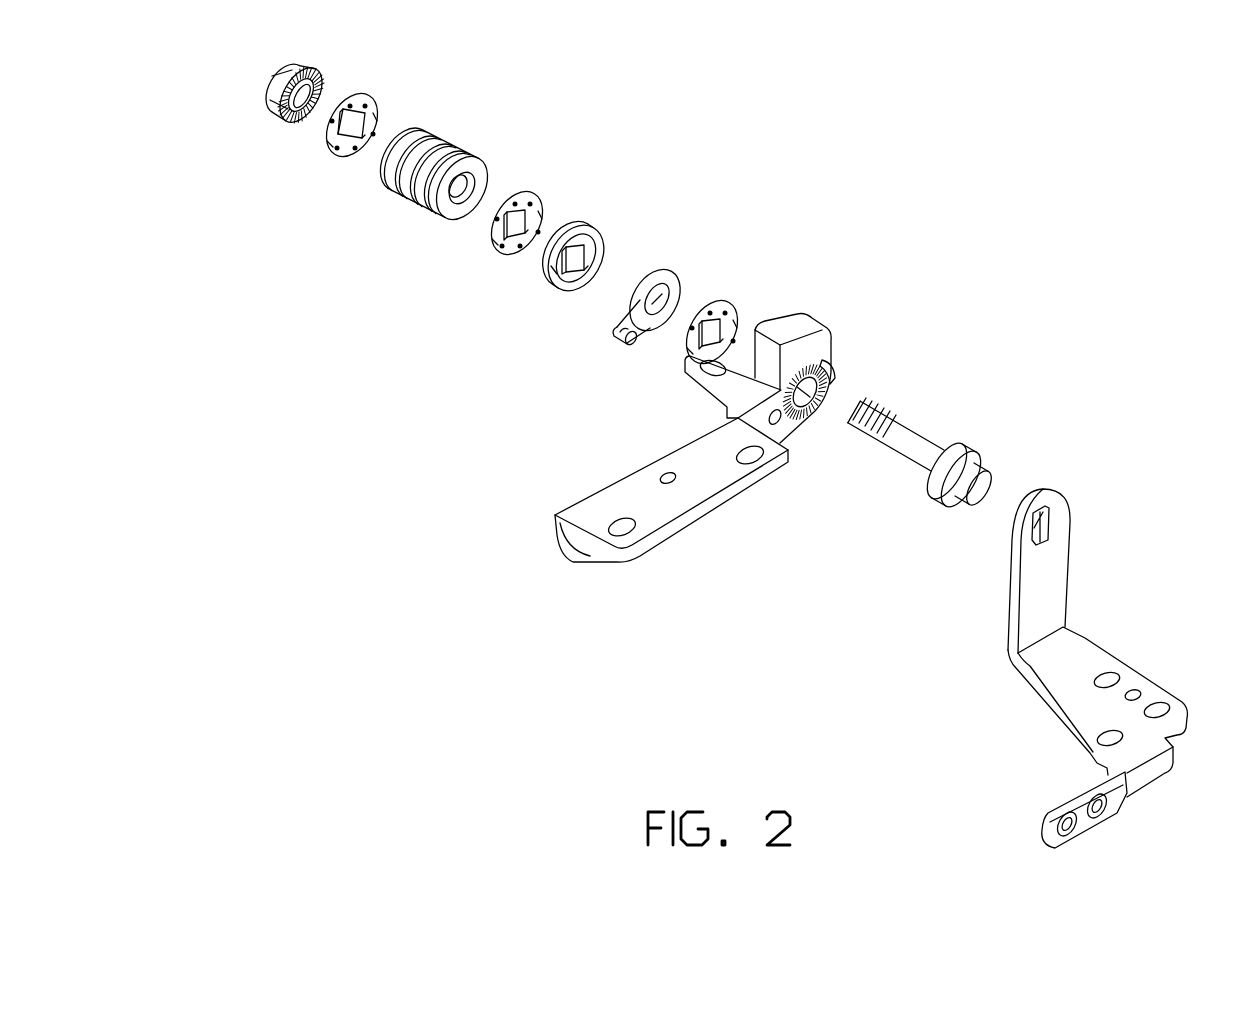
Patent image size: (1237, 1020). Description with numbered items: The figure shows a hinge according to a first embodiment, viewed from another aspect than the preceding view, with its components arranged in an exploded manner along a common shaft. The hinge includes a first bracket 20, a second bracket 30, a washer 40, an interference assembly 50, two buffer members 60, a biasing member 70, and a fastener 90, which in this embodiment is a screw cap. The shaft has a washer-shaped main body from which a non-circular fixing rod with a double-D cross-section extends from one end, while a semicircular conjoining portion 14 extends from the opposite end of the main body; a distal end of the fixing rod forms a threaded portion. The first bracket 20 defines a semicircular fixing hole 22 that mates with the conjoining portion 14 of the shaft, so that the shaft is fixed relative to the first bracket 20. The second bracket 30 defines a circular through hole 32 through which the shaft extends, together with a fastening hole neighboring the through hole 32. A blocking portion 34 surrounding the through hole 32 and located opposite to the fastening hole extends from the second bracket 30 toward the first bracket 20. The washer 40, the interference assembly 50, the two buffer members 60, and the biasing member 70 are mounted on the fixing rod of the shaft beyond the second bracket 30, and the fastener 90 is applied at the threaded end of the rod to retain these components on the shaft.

The conjoining portion 14 is at (968, 477).
The first bracket 20 is at (1108, 646).
The fixing hole 22 is at (1043, 527).
The second bracket 30 is at (730, 438).
The through hole 32 is at (807, 403).
The blocking portion 34 is at (833, 363).
The washer 40 is at (707, 302).
The interference assembly 50 is at (693, 270).
The buffer member 60 is at (530, 192).
The biasing member 70 is at (440, 140).
The fastener 90 is at (270, 100).